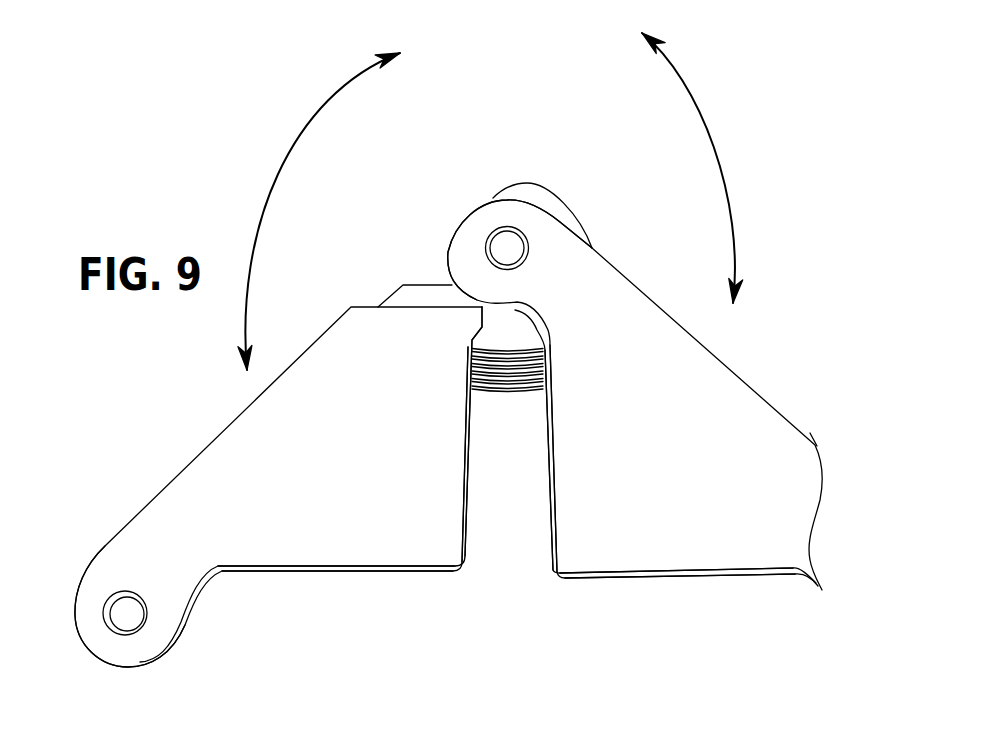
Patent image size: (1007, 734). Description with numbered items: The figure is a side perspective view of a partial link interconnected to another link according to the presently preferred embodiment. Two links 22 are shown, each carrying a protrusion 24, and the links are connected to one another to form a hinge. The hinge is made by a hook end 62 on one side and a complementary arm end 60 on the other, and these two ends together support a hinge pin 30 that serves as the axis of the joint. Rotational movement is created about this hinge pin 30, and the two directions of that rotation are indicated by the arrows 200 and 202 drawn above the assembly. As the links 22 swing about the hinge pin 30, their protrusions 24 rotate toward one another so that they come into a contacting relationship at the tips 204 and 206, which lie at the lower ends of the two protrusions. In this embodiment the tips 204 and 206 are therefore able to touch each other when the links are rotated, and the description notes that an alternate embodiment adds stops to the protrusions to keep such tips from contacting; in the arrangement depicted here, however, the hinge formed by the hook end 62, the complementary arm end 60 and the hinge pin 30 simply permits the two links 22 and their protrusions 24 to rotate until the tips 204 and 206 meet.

The link 22 is at (203, 447).
The protrusion 24 is at (452, 547).
The hinge pin 30 is at (122, 622).
The complementary arm end 60 is at (115, 560).
The hook end 62 is at (507, 347).
The arrow 200 is at (270, 175).
The arrow 202 is at (728, 165).
The tip 204 is at (457, 573).
The tip 206 is at (553, 582).